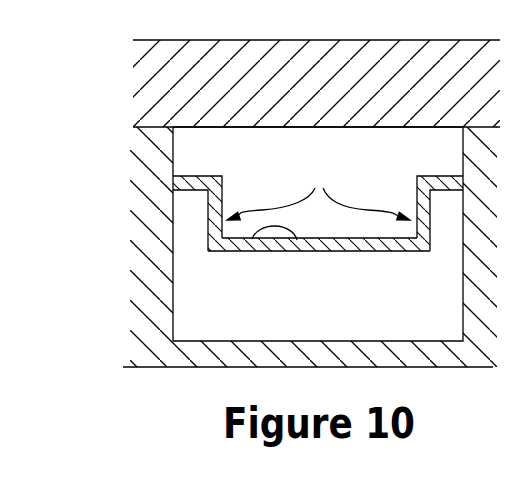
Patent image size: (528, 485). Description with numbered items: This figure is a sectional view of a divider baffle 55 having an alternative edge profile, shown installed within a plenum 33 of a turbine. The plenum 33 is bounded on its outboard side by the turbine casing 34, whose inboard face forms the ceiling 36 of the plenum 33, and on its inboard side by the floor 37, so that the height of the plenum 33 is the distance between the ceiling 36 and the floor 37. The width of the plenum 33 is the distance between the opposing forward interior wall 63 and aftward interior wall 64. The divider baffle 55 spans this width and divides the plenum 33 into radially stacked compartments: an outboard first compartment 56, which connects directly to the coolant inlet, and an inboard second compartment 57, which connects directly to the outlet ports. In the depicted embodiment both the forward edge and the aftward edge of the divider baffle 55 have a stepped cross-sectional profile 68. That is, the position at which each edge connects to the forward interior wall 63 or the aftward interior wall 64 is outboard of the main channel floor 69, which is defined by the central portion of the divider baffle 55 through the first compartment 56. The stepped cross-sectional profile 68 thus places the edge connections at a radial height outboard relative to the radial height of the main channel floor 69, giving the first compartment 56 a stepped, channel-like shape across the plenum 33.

The turbine casing 34 is at (178, 96).
The ceiling 36 is at (232, 127).
The floor 37 is at (192, 341).
The forward interior wall 63 is at (175, 260).
The aftward interior wall 64 is at (462, 250).
The divider baffle 55 is at (346, 241).
The main channel floor 69 is at (297, 240).
The stepped cross-sectional profile 68 is at (318, 189).
The first compartment 56 is at (423, 157).
The plenum 33 is at (259, 330).
The second compartment 57 is at (438, 329).